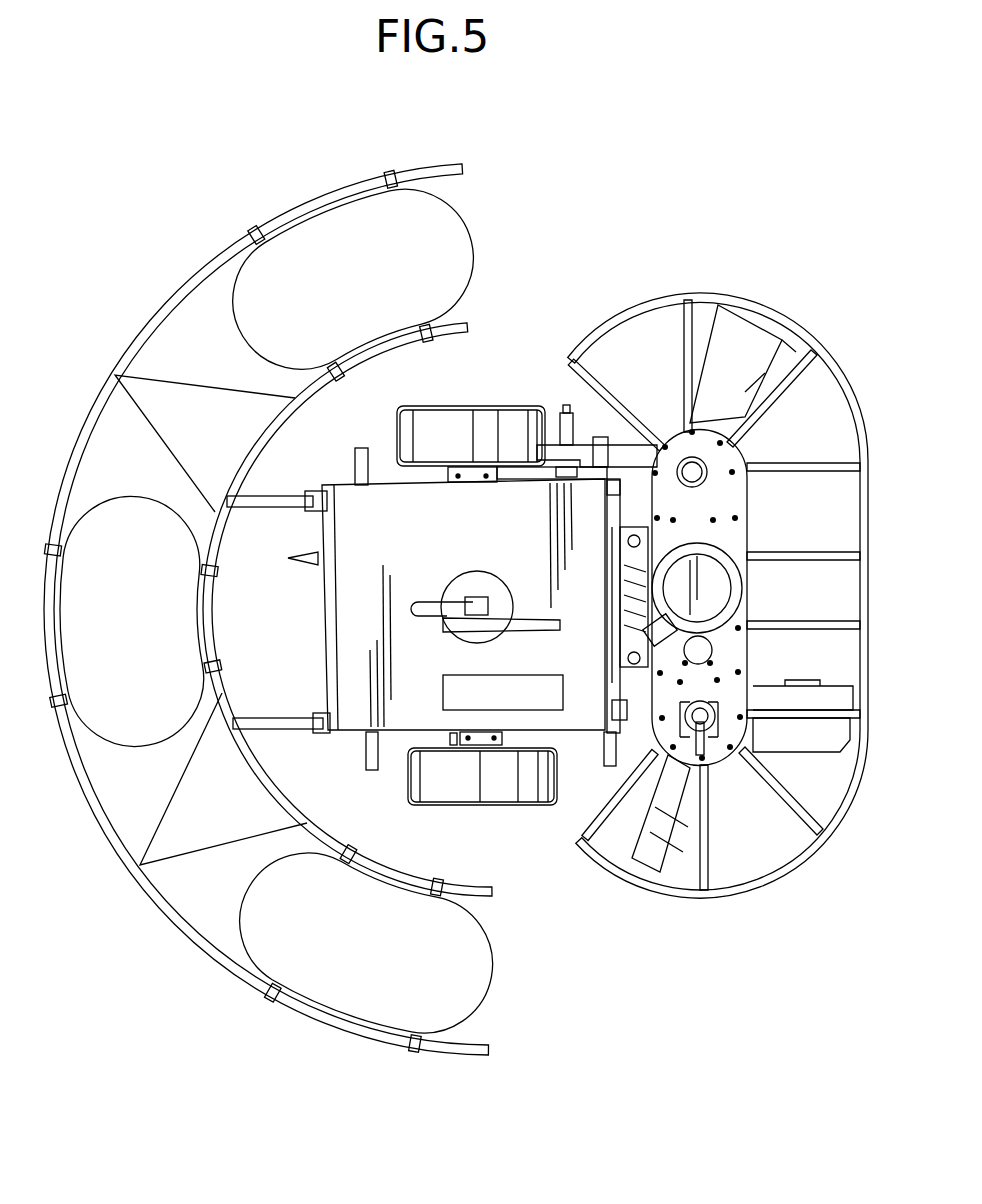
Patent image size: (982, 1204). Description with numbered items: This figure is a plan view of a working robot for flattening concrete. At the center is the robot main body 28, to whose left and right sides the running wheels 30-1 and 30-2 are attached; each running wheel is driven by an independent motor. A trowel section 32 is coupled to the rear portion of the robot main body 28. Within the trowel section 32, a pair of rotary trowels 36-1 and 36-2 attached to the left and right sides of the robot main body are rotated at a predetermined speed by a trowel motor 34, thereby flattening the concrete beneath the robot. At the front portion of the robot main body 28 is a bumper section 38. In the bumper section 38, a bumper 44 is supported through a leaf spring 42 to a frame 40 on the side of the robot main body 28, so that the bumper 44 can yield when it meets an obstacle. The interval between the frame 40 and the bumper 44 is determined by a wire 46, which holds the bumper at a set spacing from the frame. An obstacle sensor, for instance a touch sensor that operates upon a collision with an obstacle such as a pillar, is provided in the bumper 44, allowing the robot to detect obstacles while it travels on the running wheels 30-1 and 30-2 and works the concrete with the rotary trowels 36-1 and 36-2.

The robot main body 28 is at (397, 527).
The running wheel 30-1 is at (423, 805).
The running wheel 30-2 is at (418, 406).
The trowel section 32 is at (785, 880).
The trowel motor 34 is at (714, 548).
The rotary trowel 36-1 is at (605, 862).
The rotary trowel 36-2 is at (722, 306).
The bumper section 38 is at (333, 1032).
The frame 40 is at (283, 789).
The leaf spring 42 is at (462, 234).
The bumper 44 is at (157, 906).
The wire 46 is at (205, 385).